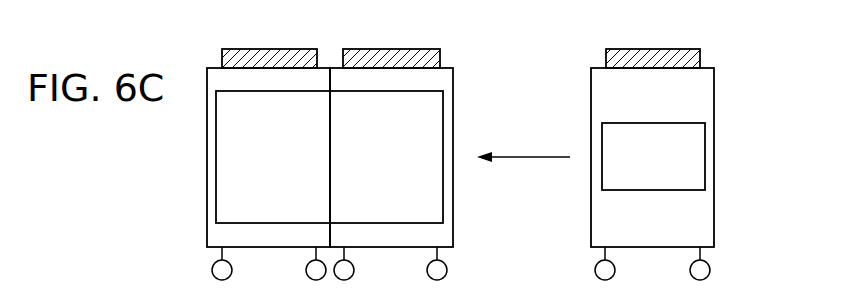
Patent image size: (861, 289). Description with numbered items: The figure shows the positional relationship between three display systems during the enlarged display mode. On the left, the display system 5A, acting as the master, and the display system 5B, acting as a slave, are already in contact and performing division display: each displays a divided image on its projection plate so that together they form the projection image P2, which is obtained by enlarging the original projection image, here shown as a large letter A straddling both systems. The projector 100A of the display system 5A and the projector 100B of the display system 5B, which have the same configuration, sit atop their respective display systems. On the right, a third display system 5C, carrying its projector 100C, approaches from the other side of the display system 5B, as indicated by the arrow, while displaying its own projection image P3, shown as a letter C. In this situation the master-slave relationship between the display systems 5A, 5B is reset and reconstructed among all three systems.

The display system 5A is at (195, 204).
The display system 5B is at (465, 204).
The display system 5C is at (728, 204).
The projector 100A is at (333, 33).
The projector 100B is at (455, 33).
The projector 100C is at (718, 33).
The projection image P2 is at (445, 132).
The projection image P3 is at (707, 133).